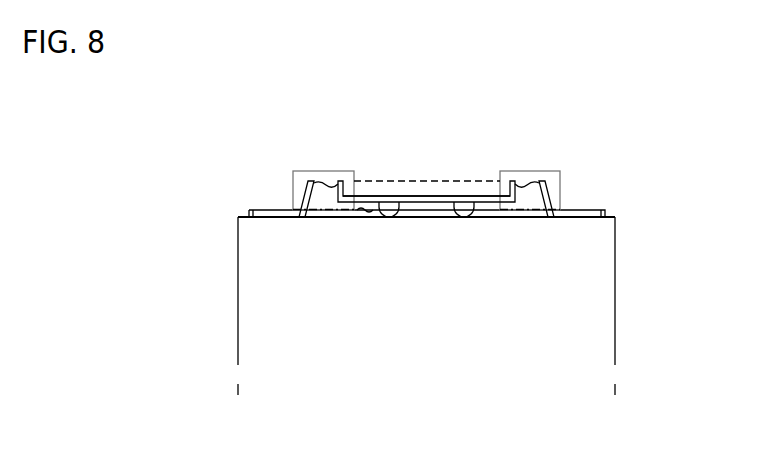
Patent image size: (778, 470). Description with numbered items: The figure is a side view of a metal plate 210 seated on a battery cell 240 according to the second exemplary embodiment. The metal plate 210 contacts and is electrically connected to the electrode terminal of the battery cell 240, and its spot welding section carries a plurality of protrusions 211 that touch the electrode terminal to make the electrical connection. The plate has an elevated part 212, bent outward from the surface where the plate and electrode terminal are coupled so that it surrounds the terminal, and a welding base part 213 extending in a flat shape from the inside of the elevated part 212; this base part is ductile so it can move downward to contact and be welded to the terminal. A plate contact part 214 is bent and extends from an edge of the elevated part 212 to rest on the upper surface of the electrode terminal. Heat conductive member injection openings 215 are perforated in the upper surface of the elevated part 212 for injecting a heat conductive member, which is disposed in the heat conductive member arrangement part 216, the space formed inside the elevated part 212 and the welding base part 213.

The metal plate 210 is at (271, 213).
The protrusions 211 is at (464, 205).
The elevated part 212 is at (292, 180).
The welding base part 213 is at (477, 200).
The plate contact part 214 is at (241, 211).
The heat conductive member injection openings 215 is at (327, 182).
The heat conductive member arrangement part 216 is at (365, 211).
The battery cell 240 is at (252, 285).